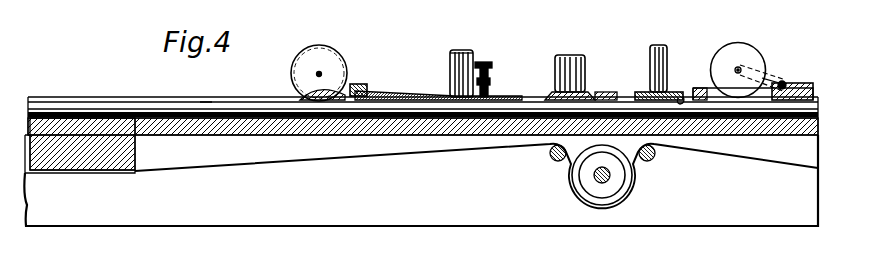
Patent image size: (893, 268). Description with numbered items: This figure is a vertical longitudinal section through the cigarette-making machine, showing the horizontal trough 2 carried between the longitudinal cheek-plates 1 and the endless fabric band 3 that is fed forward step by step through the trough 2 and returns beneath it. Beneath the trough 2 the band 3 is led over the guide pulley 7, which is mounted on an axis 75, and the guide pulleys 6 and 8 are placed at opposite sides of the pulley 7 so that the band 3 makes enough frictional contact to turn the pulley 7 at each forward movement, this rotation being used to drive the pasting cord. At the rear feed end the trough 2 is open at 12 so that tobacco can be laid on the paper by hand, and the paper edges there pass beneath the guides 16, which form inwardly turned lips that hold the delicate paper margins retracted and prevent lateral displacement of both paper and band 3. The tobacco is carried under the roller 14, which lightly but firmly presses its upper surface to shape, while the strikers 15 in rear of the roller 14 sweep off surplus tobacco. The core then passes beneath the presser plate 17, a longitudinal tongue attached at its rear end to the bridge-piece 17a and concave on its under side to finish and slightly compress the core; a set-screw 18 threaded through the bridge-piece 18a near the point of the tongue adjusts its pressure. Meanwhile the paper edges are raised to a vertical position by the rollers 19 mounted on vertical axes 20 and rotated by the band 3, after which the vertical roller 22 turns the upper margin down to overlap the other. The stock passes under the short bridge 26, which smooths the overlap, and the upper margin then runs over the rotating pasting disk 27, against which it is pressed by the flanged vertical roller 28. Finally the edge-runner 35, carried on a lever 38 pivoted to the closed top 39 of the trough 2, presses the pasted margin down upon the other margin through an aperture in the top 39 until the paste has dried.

The cheek-plate 1 is at (421, 180).
The trough 2 is at (115, 145).
The endless band 3 is at (163, 117).
The guide pulley 6 is at (651, 161).
The guide pulley 7 is at (626, 192).
The guide pulley 8 is at (550, 160).
The open portion of trough 12 is at (423, 104).
The roller 14 is at (331, 60).
The striker 15 is at (296, 96).
The guide 16 is at (204, 103).
The presser plate 17 is at (389, 93).
The bridge-piece 17a is at (358, 84).
The set-screw 18 is at (486, 62).
The bridge-piece 18a is at (491, 80).
The roller 19 is at (451, 65).
The vertical axis 20 is at (465, 50).
The vertical roller 22 is at (550, 94).
The bridge 26 is at (603, 92).
The pasting disk 27 is at (682, 100).
The vertical roller 28 is at (648, 92).
The edge-runner 35 is at (720, 56).
The lever 38 is at (773, 80).
The closed top 39 is at (792, 83).
The axis 75 is at (594, 179).